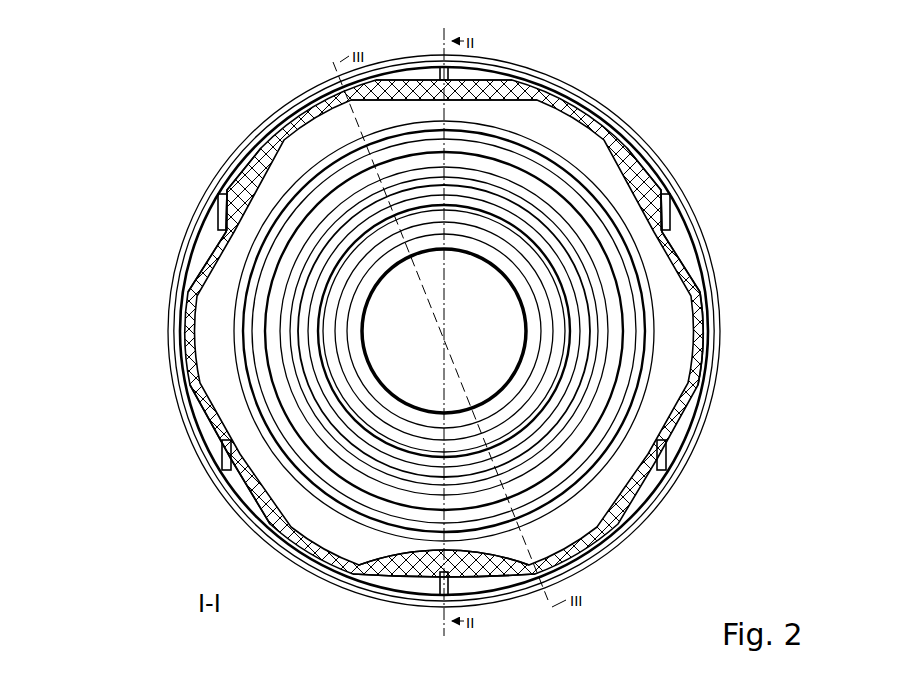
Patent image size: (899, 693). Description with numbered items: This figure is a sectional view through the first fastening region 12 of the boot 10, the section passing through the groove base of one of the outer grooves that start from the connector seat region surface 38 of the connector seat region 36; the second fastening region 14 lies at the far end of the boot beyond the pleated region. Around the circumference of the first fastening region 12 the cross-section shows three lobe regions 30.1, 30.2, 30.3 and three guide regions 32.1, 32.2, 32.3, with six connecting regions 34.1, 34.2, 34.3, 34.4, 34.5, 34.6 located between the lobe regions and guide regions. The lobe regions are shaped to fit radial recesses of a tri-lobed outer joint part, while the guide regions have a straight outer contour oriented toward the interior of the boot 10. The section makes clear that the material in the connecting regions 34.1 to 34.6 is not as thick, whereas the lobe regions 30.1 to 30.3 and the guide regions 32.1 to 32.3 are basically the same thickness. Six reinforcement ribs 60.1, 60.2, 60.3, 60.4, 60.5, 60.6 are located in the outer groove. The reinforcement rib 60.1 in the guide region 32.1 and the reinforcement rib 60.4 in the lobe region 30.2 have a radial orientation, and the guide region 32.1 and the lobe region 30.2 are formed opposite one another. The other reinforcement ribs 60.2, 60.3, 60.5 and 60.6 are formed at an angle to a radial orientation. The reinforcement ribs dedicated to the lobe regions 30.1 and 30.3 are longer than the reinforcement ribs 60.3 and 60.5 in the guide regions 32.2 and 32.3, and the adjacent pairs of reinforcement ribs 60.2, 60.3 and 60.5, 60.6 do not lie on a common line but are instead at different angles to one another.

The boot 10 is at (757, 92).
The first fastening region 12 is at (150, 272).
The second fastening region 14 is at (388, 296).
The lobe region 30.1 is at (683, 130).
The lobe region 30.2 is at (508, 620).
The lobe region 30.3 is at (208, 138).
The guide region 32.1 is at (383, 52).
The guide region 32.2 is at (742, 386).
The guide region 32.3 is at (220, 520).
The connecting region 34.1 is at (606, 90).
The connecting region 34.2 is at (742, 318).
The connecting region 34.3 is at (612, 563).
The connecting region 34.4 is at (305, 592).
The connecting region 34.5 is at (165, 335).
The connecting region 34.6 is at (292, 102).
The connector seat region 36 is at (713, 236).
The connector seat region surface 38 is at (708, 282).
The reinforcement rib 60.1 is at (463, 68).
The reinforcement rib 60.2 is at (667, 212).
The reinforcement rib 60.3 is at (675, 462).
The reinforcement rib 60.4 is at (443, 580).
The reinforcement rib 60.5 is at (222, 452).
The reinforcement rib 60.6 is at (220, 216).